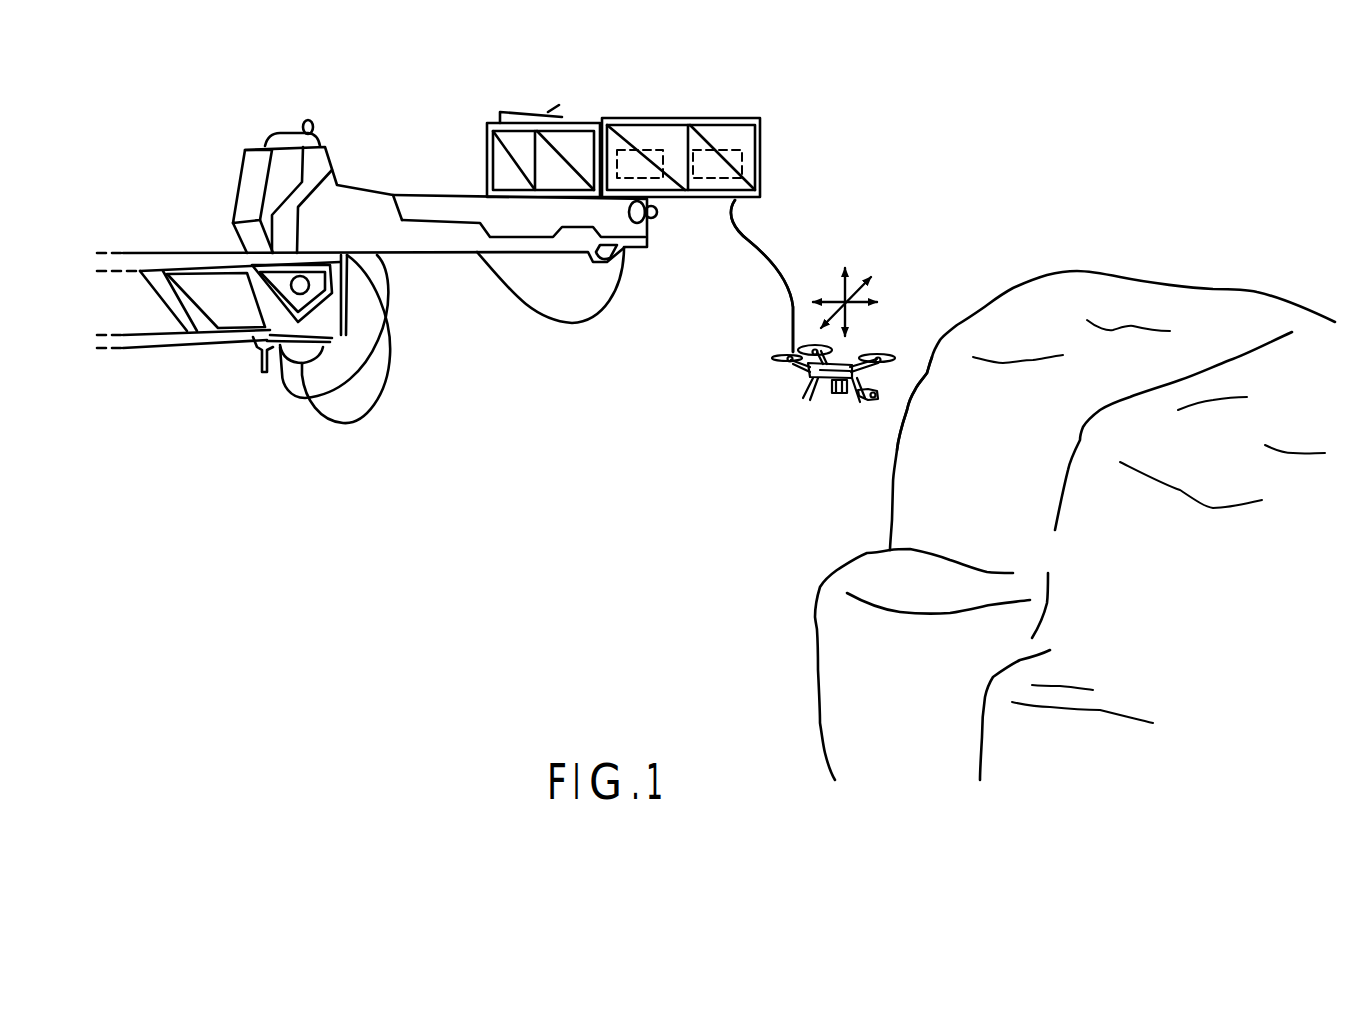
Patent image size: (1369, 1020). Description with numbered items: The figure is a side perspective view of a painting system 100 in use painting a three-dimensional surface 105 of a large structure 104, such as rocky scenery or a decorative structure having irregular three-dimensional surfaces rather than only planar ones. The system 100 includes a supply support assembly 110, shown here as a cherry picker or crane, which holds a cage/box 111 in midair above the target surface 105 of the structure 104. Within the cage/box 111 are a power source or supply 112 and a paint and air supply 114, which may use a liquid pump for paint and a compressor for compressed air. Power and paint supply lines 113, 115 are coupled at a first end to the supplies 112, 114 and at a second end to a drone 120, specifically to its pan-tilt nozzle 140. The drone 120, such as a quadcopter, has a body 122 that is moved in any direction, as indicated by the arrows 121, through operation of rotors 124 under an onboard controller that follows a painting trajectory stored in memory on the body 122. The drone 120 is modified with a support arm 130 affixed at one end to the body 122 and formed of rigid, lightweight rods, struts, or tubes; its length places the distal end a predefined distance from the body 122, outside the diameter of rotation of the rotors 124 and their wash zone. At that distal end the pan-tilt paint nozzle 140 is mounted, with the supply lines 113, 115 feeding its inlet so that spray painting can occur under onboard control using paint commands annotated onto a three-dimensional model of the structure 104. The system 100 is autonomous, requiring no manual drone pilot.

The painting system 100 is at (177, 158).
The large structure 104 is at (815, 697).
The 3D surface 105 is at (913, 390).
The supply support assembly 110 is at (364, 182).
The cage/box 111 is at (488, 155).
The power source or supply 112 is at (649, 148).
The power supply line 113 is at (750, 241).
The paint supply 114 is at (733, 148).
The paint supply line 115 is at (762, 276).
The drone 120 is at (770, 402).
The arrows 121 is at (843, 297).
The body 122 is at (813, 367).
The rotors 124 is at (777, 353).
The support arm 130 is at (832, 390).
The pan-tilt paint nozzle 140 is at (883, 390).